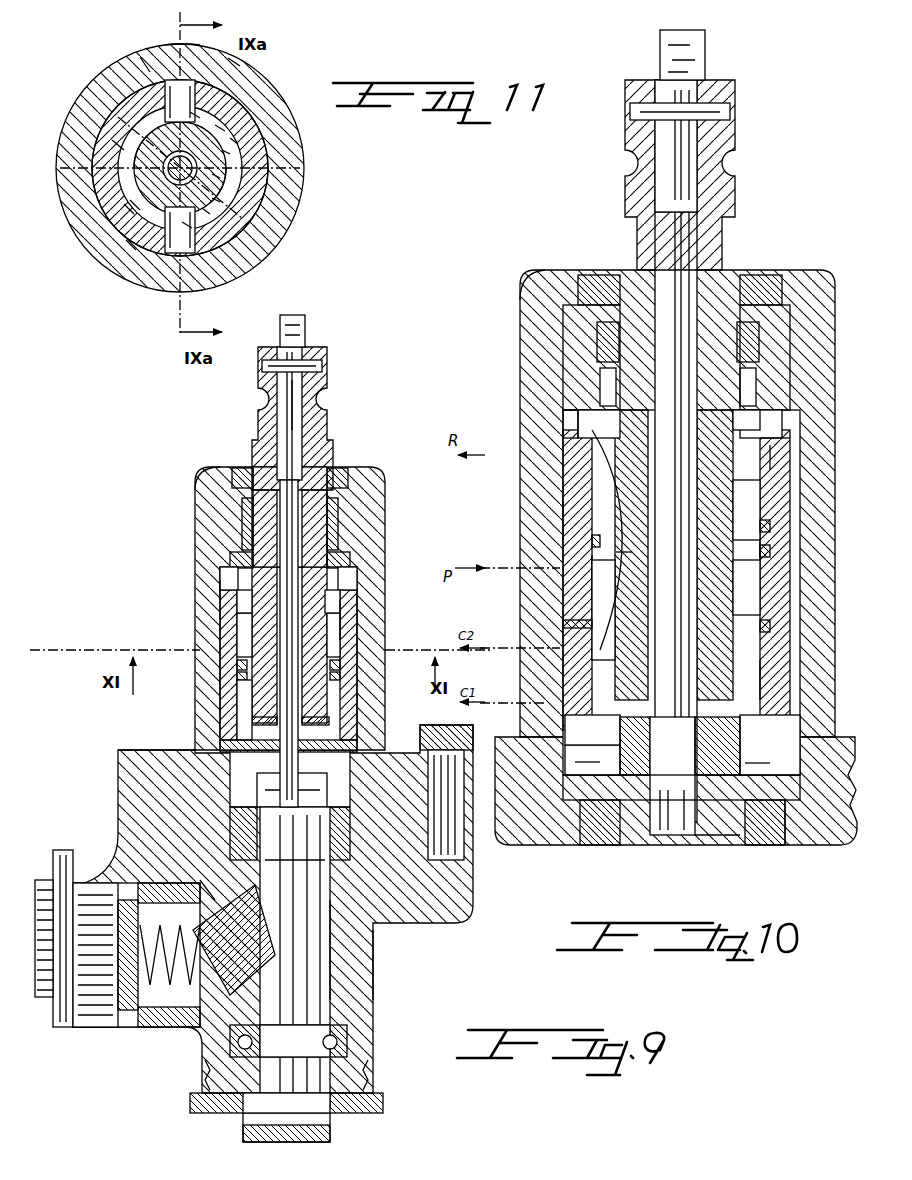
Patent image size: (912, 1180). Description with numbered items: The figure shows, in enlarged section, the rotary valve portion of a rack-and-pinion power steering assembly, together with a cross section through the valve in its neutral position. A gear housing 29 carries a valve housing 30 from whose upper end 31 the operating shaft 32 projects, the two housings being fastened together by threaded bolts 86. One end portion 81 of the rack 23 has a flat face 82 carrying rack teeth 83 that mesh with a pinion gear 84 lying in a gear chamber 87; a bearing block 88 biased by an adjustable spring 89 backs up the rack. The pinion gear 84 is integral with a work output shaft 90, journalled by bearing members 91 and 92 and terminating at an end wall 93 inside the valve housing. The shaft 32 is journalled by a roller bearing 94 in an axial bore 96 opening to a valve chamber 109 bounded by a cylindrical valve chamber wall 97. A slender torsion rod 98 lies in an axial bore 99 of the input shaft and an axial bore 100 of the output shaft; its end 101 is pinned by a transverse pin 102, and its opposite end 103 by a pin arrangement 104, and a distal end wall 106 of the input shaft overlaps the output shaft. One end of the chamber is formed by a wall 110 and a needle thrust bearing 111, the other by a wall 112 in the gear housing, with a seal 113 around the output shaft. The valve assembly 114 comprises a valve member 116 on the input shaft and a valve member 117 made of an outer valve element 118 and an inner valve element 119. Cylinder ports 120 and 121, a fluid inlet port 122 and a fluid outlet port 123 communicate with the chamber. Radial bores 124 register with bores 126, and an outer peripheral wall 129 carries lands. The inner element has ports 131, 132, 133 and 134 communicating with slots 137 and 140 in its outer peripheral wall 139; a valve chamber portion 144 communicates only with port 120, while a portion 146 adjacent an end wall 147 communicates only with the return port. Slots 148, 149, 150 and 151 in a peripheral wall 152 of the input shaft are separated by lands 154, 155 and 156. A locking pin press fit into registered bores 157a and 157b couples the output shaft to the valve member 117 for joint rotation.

In FIG. 9, the rack 23 is at (225, 965).
In FIG. 9, the gear housing 29 is at (113, 805).
In FIG. 10, the gear housing 29 is at (812, 832).
In FIG. 9, the valve housing 30 is at (402, 448).
In FIG. 10, the valve housing 30 is at (524, 278).
In FIG. 11, the valve housing 30 is at (72, 100).
In FIG. 9, the upper end of valve housing 31 is at (202, 465).
In FIG. 10, the upper end of valve housing 31 is at (556, 268).
In FIG. 9, the operating shaft 32 is at (330, 381).
In FIG. 10, the operating shaft 32 is at (622, 150).
In FIG. 9, the end portion of rack 81 is at (205, 885).
In FIG. 9, the flat face 82 is at (262, 950).
In FIG. 9, the rack teeth 83 is at (280, 975).
In FIG. 9, the pinion gear 84 is at (297, 1000).
In FIG. 9, the threaded bolts 86 is at (445, 732).
In FIG. 9, the gear chamber 87 is at (332, 938).
In FIG. 9, the bearing block 88 is at (160, 1000).
In FIG. 9, the adjustable spring 89 is at (148, 940).
In FIG. 9, the work output shaft 90 is at (380, 905).
In FIG. 10, the work output shaft 90 is at (742, 836).
In FIG. 9, the bearing member 91 is at (235, 1052).
In FIG. 9, the bearing member 92 is at (333, 828).
In FIG. 10, the bearing member 92 is at (790, 838).
In FIG. 9, the end wall of output shaft 93 is at (322, 673).
In FIG. 10, the end wall of output shaft 93 is at (592, 615).
In FIG. 9, the roller bearing 94 is at (250, 535).
In FIG. 9, the axial bore 96 is at (243, 470).
In FIG. 10, the cylindrical valve chamber wall 97 is at (562, 487).
In FIG. 9, the torsion rod 98 is at (292, 445).
In FIG. 10, the torsion rod 98 is at (678, 245).
In FIG. 11, the torsion rod 98 is at (176, 163).
In FIG. 9, the axial bore 99 is at (283, 388).
In FIG. 10, the axial bore 99 is at (690, 260).
In FIG. 9, the axial bore 100 is at (292, 758).
In FIG. 10, the axial bore 100 is at (700, 746).
In FIG. 9, the end of torsion rod 101 is at (290, 353).
In FIG. 10, the end of torsion rod 101 is at (676, 158).
In FIG. 9, the transverse pin 102 is at (262, 368).
In FIG. 10, the transverse pin 102 is at (728, 84).
In FIG. 10, the opposite end of torsion rod 103 is at (667, 795).
In FIG. 10, the pin arrangement 104 is at (643, 785).
In FIG. 10, the distal end wall of input shaft 106 is at (740, 702).
In FIG. 9, the valve chamber 109 is at (357, 586).
In FIG. 10, the valve chamber 109 is at (777, 467).
In FIG. 9, the radial end wall 110 is at (222, 573).
In FIG. 10, the radial end wall 110 is at (565, 430).
In FIG. 9, the needle thrust bearing 111 is at (345, 587).
In FIG. 10, the needle thrust bearing 111 is at (760, 420).
In FIG. 9, the radial end wall 112 is at (226, 752).
In FIG. 10, the radial end wall 112 is at (582, 812).
In FIG. 9, the seal 113 is at (197, 752).
In FIG. 10, the seal 113 is at (597, 822).
In FIG. 9, the valve assembly 114 is at (218, 582).
In FIG. 10, the valve assembly 114 is at (560, 515).
In FIG. 9, the valve member 116 is at (245, 676).
In FIG. 10, the valve member 116 is at (740, 628).
In FIG. 11, the valve member 116 is at (220, 128).
In FIG. 10, the valve member 117 is at (768, 498).
In FIG. 9, the outer valve element 118 is at (354, 607).
In FIG. 10, the outer valve element 118 is at (775, 546).
In FIG. 11, the outer valve element 118 is at (195, 115).
In FIG. 9, the inner valve element 119 is at (337, 605).
In FIG. 10, the inner valve element 119 is at (772, 530).
In FIG. 11, the inner valve element 119 is at (225, 150).
In FIG. 10, the cylinder port 120 is at (533, 700).
In FIG. 10, the cylinder port 121 is at (562, 645).
In FIG. 10, the fluid inlet port 122 is at (560, 560).
In FIG. 10, the fluid outlet port 123 is at (560, 425).
In FIG. 10, the radial bores 124 is at (590, 548).
In FIG. 11, the radial bores 124 is at (167, 255).
In FIG. 11, the bores 126 is at (190, 90).
In FIG. 11, the outer peripheral wall 129 is at (168, 48).
In FIG. 9, the port 131 is at (232, 628).
In FIG. 10, the port 131 is at (610, 538).
In FIG. 11, the port 131 is at (150, 80).
In FIG. 11, the port 132 is at (128, 210).
In FIG. 11, the port 133 is at (185, 225).
In FIG. 11, the port 134 is at (235, 140).
In FIG. 9, the axially extending slot 137 is at (250, 686).
In FIG. 10, the axially extending slot 137 is at (650, 733).
In FIG. 11, the outer peripheral wall 139 is at (118, 145).
In FIG. 10, the axial slot 140 is at (757, 605).
In FIG. 10, the valve chamber portion 144 is at (757, 758).
In FIG. 10, the valve chamber portion 146 is at (778, 456).
In FIG. 10, the end wall of inner valve element 147 is at (790, 442).
In FIG. 10, the slot 148 is at (630, 552).
In FIG. 11, the slot 148 is at (135, 205).
In FIG. 11, the slot 149 is at (130, 247).
In FIG. 11, the slot 150 is at (215, 200).
In FIG. 11, the slot 151 is at (235, 62).
In FIG. 9, the peripheral wall of input shaft 152 is at (245, 513).
In FIG. 11, the land 154 is at (205, 210).
In FIG. 11, the land 155 is at (215, 175).
In FIG. 11, the land 156 is at (145, 56).
In FIG. 10, the bore 157a is at (590, 758).
In FIG. 10, the bore 157b is at (787, 670).